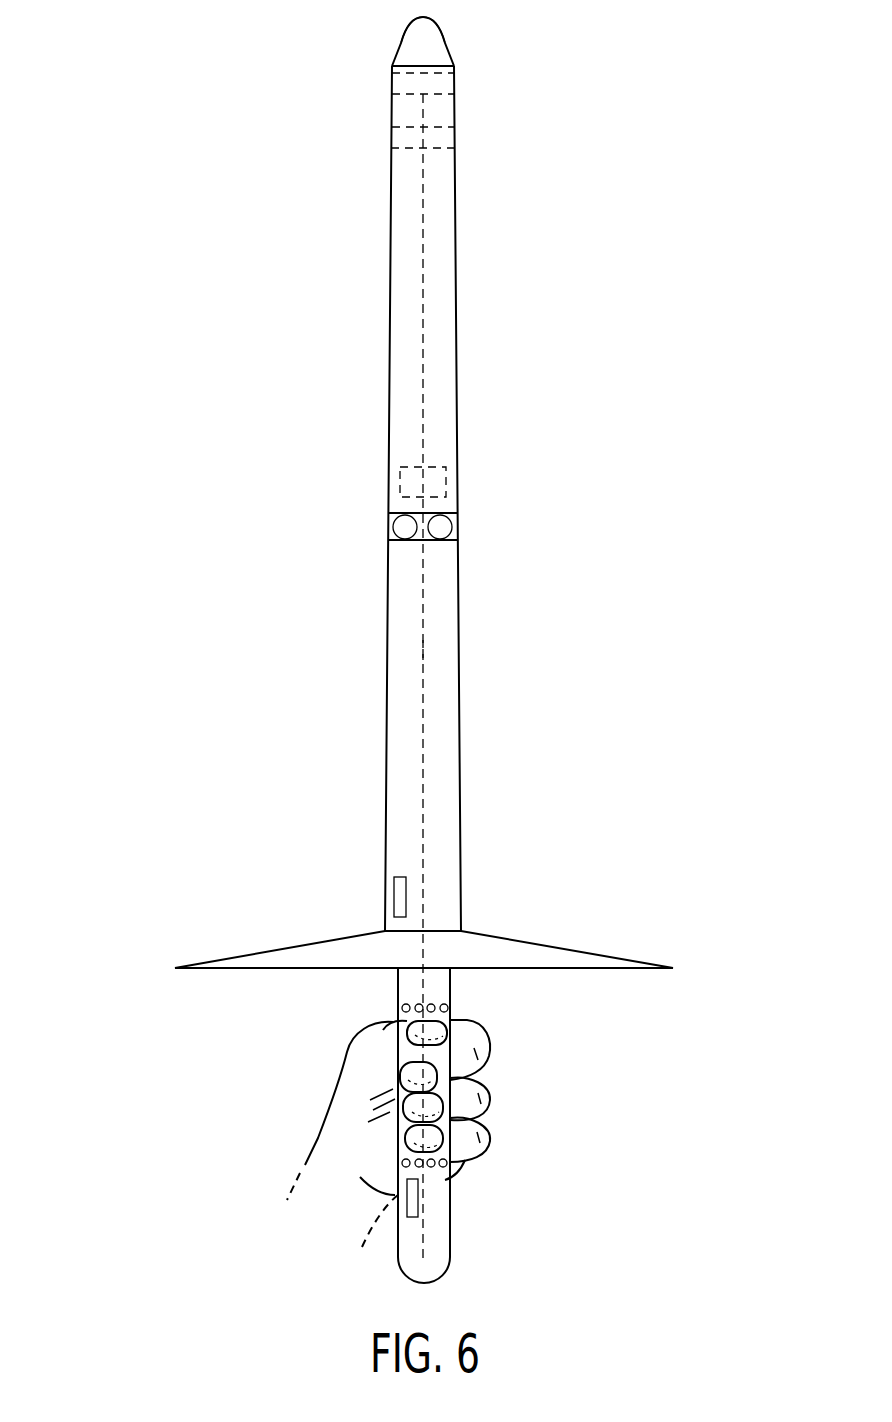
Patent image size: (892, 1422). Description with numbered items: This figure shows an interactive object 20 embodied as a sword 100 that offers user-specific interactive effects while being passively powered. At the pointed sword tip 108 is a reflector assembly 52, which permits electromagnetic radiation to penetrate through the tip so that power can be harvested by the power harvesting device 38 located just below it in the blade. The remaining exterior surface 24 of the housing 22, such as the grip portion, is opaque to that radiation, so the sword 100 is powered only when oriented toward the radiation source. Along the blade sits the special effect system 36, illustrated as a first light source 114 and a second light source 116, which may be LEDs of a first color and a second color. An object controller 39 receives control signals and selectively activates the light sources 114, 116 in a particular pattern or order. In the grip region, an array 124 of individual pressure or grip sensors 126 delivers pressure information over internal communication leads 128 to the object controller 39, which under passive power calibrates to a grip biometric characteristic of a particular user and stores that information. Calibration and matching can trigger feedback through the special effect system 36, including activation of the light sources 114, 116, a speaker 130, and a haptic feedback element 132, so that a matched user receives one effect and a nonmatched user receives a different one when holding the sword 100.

The interactive object 20 is at (211, 800).
The sword 100 is at (370, 651).
The housing 22 is at (461, 762).
The exterior surface 24 is at (485, 932).
The special effect system 36 is at (452, 527).
The power harvesting device 38 is at (456, 84).
The object controller 39 is at (456, 139).
The reflector assembly 52 is at (400, 45).
The sword tip 108 is at (453, 40).
The first light source 114 is at (396, 514).
The second light source 116 is at (449, 514).
The array 124 is at (395, 1001).
The pressure or grip sensors 126 is at (444, 1166).
The internal communication leads 128 is at (423, 650).
The speaker 130 is at (406, 1200).
The haptic feedback element 132 is at (394, 897).